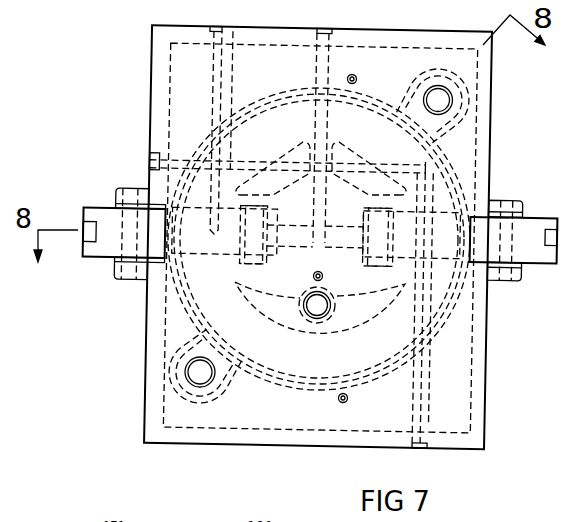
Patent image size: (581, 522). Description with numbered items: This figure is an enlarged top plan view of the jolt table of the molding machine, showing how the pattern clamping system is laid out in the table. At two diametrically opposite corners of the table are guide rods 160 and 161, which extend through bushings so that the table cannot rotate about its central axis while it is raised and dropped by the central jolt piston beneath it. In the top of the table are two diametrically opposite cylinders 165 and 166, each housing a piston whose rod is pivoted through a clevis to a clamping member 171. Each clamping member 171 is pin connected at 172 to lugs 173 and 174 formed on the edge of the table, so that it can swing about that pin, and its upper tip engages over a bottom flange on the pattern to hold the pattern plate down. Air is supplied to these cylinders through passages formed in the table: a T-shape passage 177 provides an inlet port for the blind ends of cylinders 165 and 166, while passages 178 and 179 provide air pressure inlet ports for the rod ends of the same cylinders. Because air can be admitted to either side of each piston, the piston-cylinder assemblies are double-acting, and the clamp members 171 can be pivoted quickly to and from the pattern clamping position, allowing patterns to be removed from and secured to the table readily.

The guide rod 160 is at (186, 375).
The guide rod 161 is at (447, 107).
The cylinder 165 is at (210, 262).
The cylinder 166 is at (362, 259).
The clamping member 171 is at (536, 222).
The pin connection 172 is at (125, 256).
The lug 173 is at (148, 186).
The lug 174 is at (120, 283).
The T-shape passage 177 is at (328, 236).
The passage 178 is at (433, 379).
The passage 179 is at (222, 77).